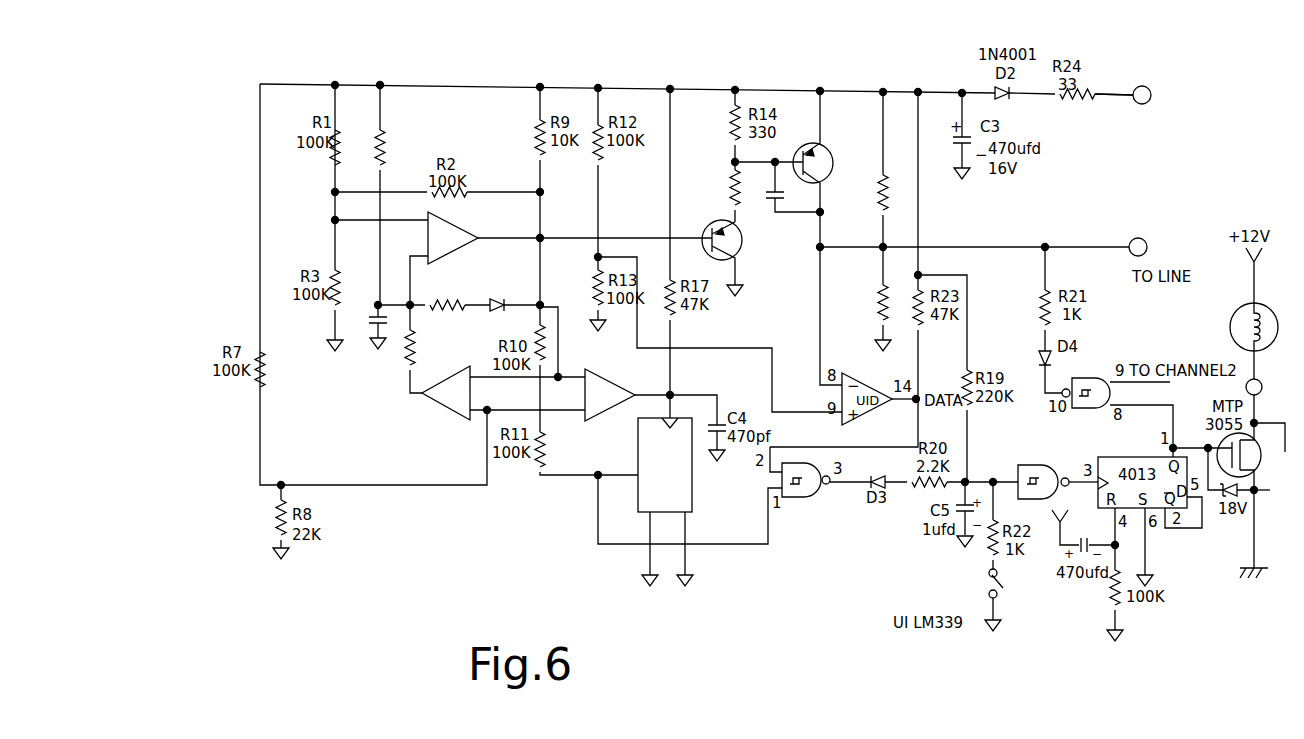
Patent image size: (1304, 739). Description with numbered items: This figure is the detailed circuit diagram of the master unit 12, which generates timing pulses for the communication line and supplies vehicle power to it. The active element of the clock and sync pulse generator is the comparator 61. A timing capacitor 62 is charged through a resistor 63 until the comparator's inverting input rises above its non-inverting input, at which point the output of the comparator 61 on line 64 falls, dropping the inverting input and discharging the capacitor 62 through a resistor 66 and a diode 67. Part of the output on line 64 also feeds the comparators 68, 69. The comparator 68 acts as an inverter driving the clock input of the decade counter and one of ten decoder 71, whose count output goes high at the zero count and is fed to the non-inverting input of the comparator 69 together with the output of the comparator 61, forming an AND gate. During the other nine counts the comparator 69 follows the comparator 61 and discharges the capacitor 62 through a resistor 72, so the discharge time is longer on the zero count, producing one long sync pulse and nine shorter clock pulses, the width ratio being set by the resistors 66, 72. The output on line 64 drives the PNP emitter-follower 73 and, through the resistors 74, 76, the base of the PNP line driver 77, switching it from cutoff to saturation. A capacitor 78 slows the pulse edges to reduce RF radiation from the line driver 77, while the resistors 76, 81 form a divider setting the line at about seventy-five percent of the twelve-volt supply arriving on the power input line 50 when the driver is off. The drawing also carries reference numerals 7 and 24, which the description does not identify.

The master unit 12 is at (1152, 86).
The power input line 50 is at (1126, 94).
The comparator 61 is at (464, 228).
The timing capacitor 62 is at (376, 303).
The resistor 63 is at (378, 150).
The line 64 is at (513, 229).
The resistor 66 is at (460, 310).
The diode 67 is at (498, 295).
The comparator 68 is at (606, 422).
The comparator 69 is at (464, 420).
The decade counter and one of ten decoder 71 is at (638, 502).
The resistor 72 is at (407, 372).
The emitter-follower 73 is at (708, 224).
The resistor 74 is at (740, 188).
The resistor 76 is at (886, 180).
The line driver 77 is at (826, 142).
The capacitor 78 is at (774, 204).
The resistor 81 is at (878, 288).
The lamp terminal 7 is at (1269, 445).
The ground terminal 24 is at (1267, 504).